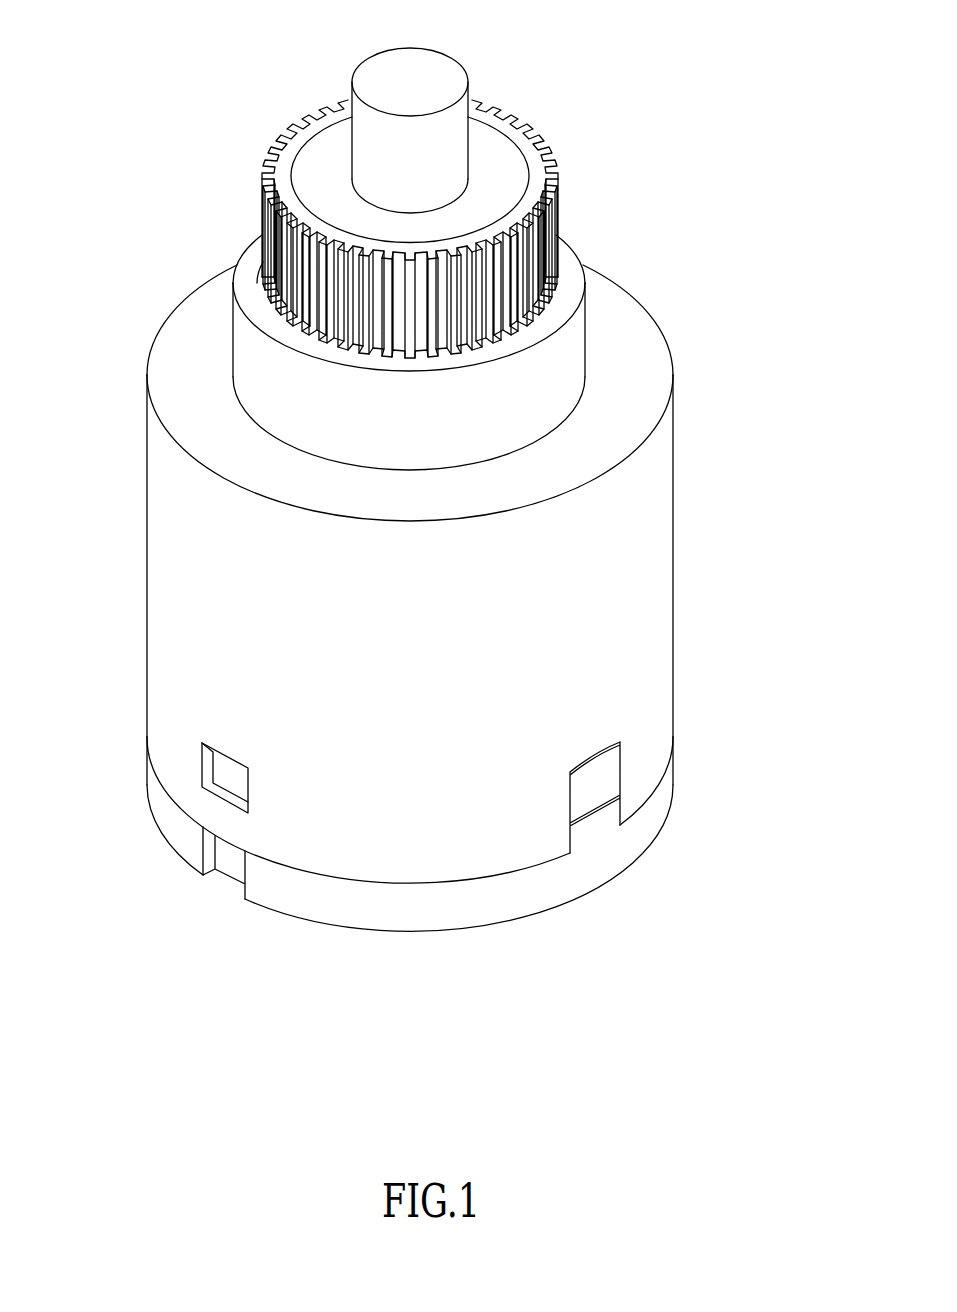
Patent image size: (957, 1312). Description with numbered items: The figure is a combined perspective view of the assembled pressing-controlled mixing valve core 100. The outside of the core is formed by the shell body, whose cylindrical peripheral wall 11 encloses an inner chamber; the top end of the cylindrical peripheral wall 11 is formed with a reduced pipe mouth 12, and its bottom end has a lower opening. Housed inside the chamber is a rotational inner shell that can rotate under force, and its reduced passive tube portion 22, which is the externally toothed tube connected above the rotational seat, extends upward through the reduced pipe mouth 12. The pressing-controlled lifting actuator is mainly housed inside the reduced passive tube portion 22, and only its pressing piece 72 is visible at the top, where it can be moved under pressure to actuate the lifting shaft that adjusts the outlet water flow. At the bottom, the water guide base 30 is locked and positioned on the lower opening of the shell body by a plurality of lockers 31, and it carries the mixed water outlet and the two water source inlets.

The pressing-controlled mixing valve core 100 is at (650, 180).
The cylindrical peripheral wall 11 is at (152, 571).
The reduced pipe mouth 12 is at (282, 308).
The reduced passive tube portion 22 is at (263, 208).
The pressing piece 72 is at (453, 70).
The water guide base 30 is at (655, 856).
The lockers 31 is at (227, 787).